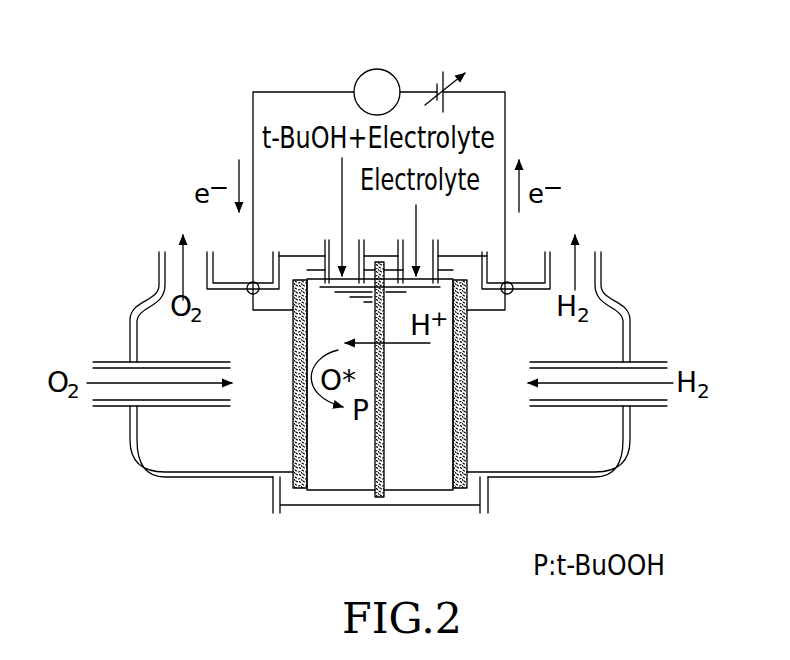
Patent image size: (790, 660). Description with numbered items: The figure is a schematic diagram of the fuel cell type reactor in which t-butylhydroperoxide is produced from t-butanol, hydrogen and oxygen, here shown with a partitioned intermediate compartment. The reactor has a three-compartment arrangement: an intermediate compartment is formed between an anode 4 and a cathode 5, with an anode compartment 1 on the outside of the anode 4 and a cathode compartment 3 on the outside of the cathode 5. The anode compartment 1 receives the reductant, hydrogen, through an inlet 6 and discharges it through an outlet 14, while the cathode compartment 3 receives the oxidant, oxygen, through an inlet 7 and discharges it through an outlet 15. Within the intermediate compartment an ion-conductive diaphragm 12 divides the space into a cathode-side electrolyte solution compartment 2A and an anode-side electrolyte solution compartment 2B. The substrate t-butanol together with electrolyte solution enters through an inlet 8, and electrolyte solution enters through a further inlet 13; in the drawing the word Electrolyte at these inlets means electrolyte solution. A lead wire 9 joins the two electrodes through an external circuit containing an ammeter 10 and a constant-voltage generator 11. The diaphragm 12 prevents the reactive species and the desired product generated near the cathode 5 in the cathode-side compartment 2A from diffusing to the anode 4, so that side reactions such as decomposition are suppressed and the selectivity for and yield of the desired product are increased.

The anode compartment 1 is at (573, 462).
The cathode-side electrolyte solution compartment 2A is at (335, 478).
The anode-side electrolyte solution compartment 2B is at (440, 478).
The cathode compartment 3 is at (178, 462).
The anode 4 is at (467, 430).
The cathode 5 is at (293, 440).
The inlet for a reductant 6 is at (650, 406).
The inlet for an oxidant 7 is at (105, 406).
The inlet for a substrate and an electrolyte solution 8 is at (325, 258).
The lead wire 9 is at (505, 118).
The ammeter 10 is at (364, 75).
The constant-voltage generator 11 is at (448, 72).
The diaphragm 12 is at (384, 488).
The inlet for an electrolyte solution 13 is at (438, 258).
The outlet for a reductant 14 is at (601, 262).
The outlet for an oxidant 15 is at (159, 262).